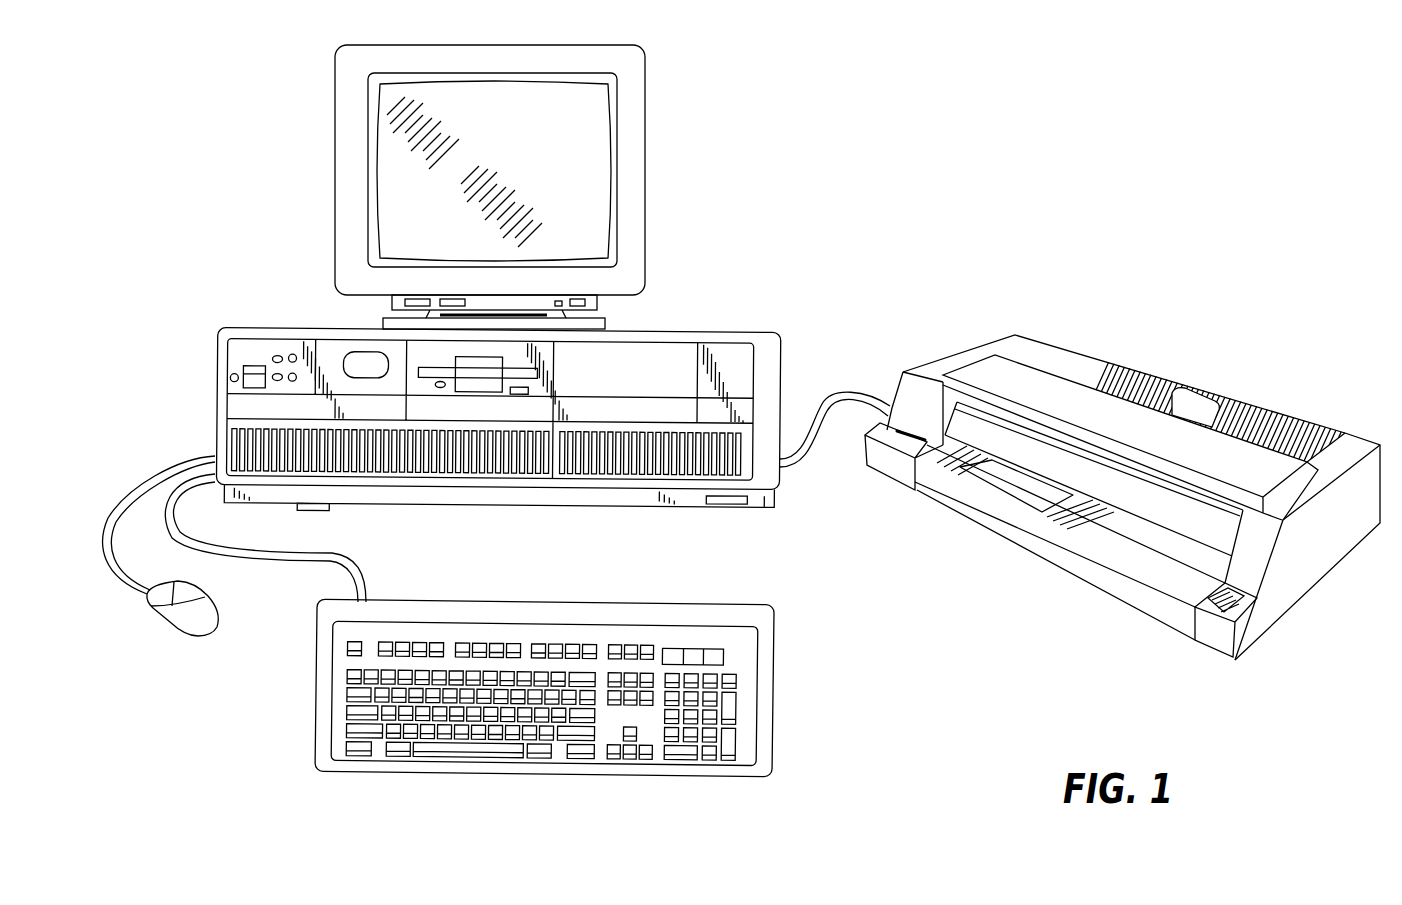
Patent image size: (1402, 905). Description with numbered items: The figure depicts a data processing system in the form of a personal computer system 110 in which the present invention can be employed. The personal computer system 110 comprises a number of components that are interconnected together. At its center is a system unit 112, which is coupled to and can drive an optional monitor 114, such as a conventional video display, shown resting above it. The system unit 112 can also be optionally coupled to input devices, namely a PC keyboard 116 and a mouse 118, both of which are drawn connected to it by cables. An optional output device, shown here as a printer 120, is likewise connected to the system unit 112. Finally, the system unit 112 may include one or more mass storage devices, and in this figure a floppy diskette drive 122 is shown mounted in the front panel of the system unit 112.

The personal computer system 110 is at (900, 167).
The system unit 112 is at (703, 318).
The monitor 114 is at (666, 173).
The PC keyboard 116 is at (645, 585).
The mouse 118 is at (173, 618).
The printer 120 is at (976, 330).
The floppy diskette drive 122 is at (480, 383).